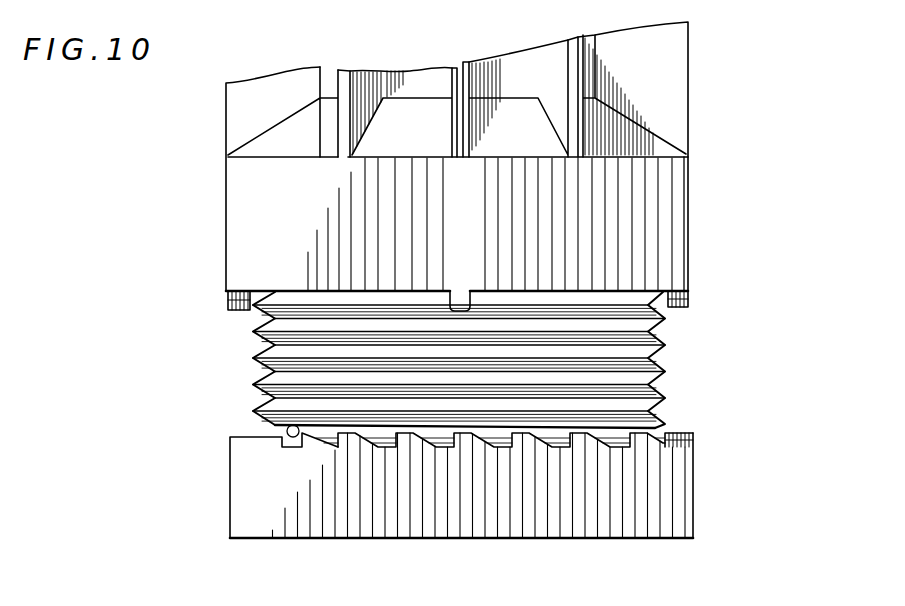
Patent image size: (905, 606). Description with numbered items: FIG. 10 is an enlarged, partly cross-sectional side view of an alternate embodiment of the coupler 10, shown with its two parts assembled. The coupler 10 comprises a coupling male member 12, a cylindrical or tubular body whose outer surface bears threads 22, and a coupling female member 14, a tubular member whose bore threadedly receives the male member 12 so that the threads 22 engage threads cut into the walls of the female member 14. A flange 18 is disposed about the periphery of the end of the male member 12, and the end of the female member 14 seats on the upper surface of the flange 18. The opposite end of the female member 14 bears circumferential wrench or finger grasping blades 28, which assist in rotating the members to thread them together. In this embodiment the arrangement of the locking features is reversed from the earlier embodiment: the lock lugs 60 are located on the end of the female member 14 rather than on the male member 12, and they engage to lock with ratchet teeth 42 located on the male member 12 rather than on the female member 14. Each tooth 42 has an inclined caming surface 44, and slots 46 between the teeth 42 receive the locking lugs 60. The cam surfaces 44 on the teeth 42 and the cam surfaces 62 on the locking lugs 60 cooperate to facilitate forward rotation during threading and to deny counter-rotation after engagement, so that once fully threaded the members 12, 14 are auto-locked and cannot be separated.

The coupler 10 is at (760, 195).
The coupling male member 12 is at (600, 538).
The coupling female member 14 is at (253, 195).
The flange 18 is at (676, 503).
The threads 22 is at (663, 379).
The wrench or finger grasping blades 28 is at (633, 65).
The ratchet teeth 42 is at (278, 446).
The inclined caming surface 44 is at (655, 436).
The slots 46 is at (296, 438).
The locking lugs 60 is at (228, 297).
The cam surfaces 62 is at (388, 306).